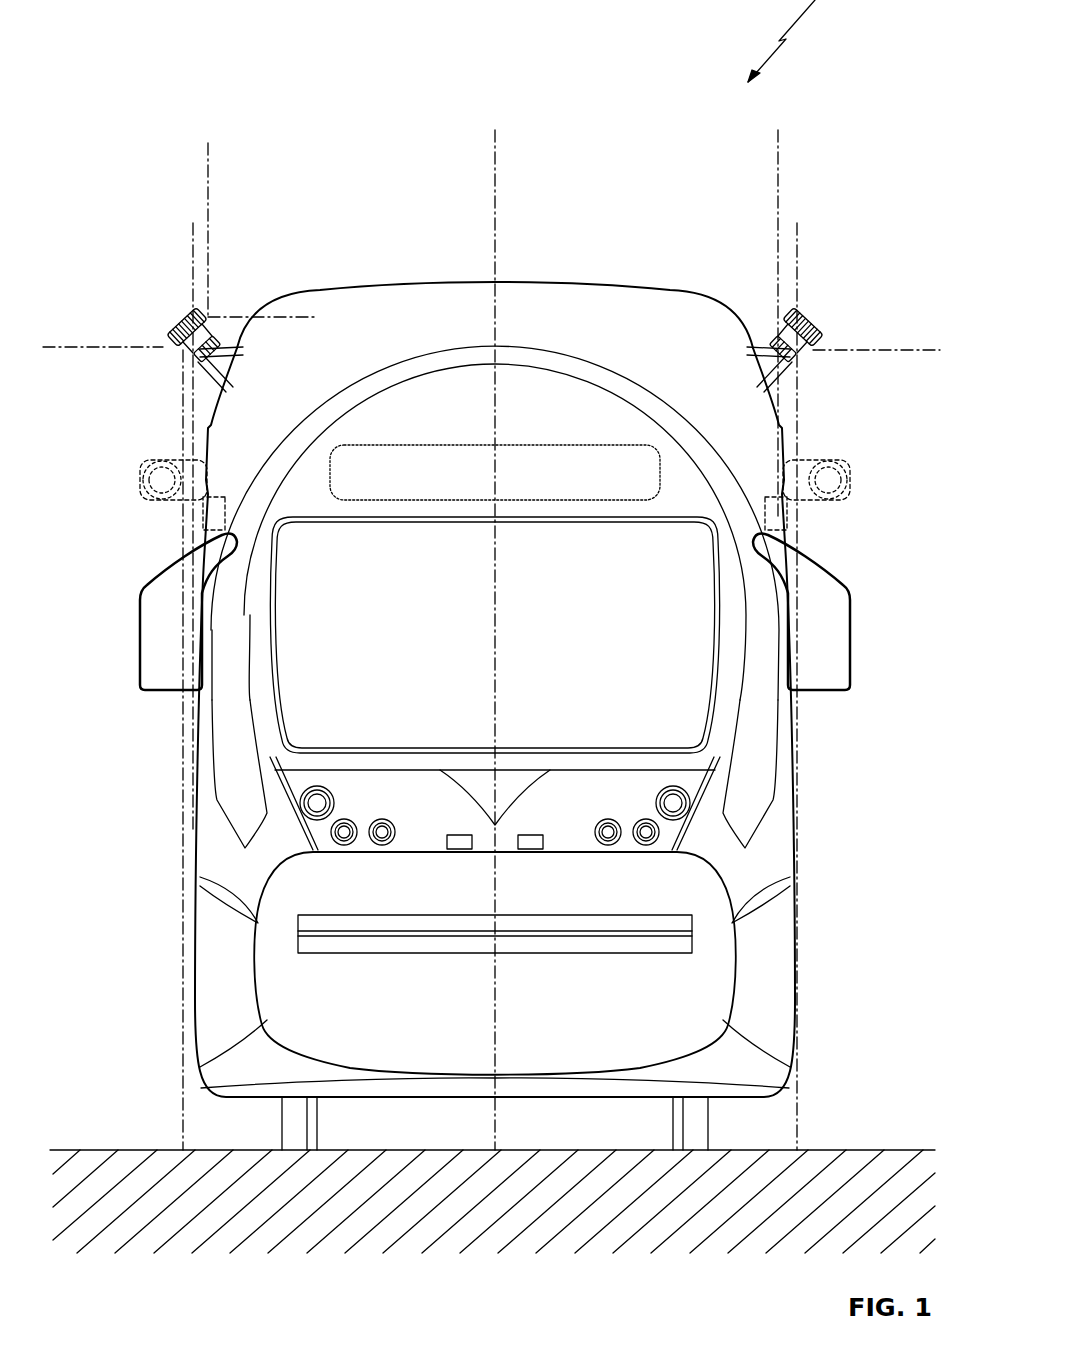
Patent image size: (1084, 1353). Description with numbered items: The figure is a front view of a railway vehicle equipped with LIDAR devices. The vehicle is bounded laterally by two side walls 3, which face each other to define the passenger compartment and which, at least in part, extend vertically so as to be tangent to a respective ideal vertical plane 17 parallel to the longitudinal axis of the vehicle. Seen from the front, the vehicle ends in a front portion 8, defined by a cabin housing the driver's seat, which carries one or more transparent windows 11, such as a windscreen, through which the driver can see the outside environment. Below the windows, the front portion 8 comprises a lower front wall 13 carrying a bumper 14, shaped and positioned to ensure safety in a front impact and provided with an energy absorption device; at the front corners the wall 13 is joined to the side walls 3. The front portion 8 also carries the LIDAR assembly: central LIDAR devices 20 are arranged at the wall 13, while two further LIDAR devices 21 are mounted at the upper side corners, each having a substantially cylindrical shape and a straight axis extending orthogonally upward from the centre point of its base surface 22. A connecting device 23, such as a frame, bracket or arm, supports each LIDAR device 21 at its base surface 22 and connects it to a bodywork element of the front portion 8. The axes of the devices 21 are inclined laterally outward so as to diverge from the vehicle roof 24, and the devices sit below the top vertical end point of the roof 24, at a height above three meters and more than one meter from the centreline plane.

The side walls 3 is at (190, 962).
The front portion 8 is at (775, 780).
The transparent windows 11 is at (692, 697).
The lower front wall 13 is at (727, 813).
The bumper 14 is at (693, 993).
The ideal vertical plane 17 is at (190, 532).
The central LIDAR devices 20 is at (460, 850).
The LIDAR devices 21 is at (822, 323).
The base surface 22 is at (780, 358).
The connecting device 23 is at (757, 345).
The vehicle roof 24 is at (425, 283).